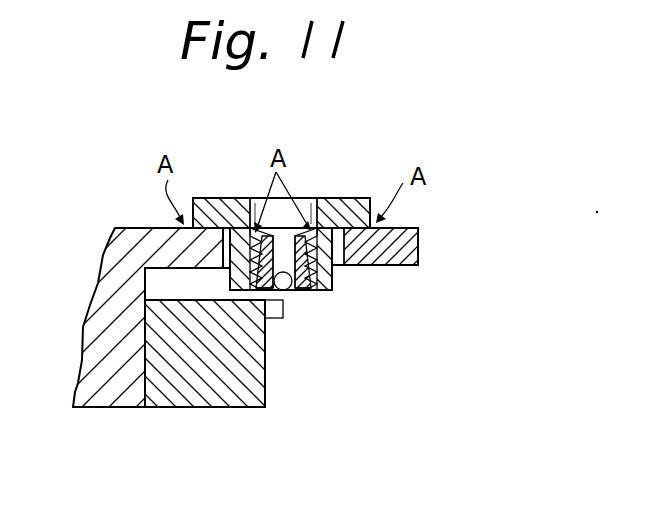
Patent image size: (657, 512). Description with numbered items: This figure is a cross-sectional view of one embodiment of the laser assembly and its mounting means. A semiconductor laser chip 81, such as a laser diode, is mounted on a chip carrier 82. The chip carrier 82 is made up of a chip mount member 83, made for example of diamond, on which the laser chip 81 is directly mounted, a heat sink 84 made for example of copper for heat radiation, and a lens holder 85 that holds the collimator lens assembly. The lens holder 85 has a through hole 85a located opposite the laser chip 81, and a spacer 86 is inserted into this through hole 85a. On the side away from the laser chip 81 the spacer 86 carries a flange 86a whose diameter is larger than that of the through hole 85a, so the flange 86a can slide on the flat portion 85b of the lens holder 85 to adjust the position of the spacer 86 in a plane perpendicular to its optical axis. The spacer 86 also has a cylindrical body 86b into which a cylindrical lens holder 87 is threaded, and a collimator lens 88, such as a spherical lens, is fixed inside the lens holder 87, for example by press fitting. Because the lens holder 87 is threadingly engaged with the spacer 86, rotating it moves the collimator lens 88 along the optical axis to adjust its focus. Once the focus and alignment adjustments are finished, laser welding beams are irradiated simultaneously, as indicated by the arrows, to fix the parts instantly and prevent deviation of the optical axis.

The semiconductor laser chip 81 is at (295, 300).
The chip carrier 82 is at (128, 412).
The chip mount member 83 is at (272, 319).
The heat sink 84 is at (215, 409).
The lens holder 85 is at (116, 227).
The through hole 85a is at (340, 266).
The flat portion 85b is at (410, 226).
The spacer 86 is at (326, 190).
The flange 86a is at (372, 196).
The cylindrical body 86b is at (235, 281).
The cylindrical lens holder 87 is at (300, 291).
The collimator lens 88 is at (289, 291).